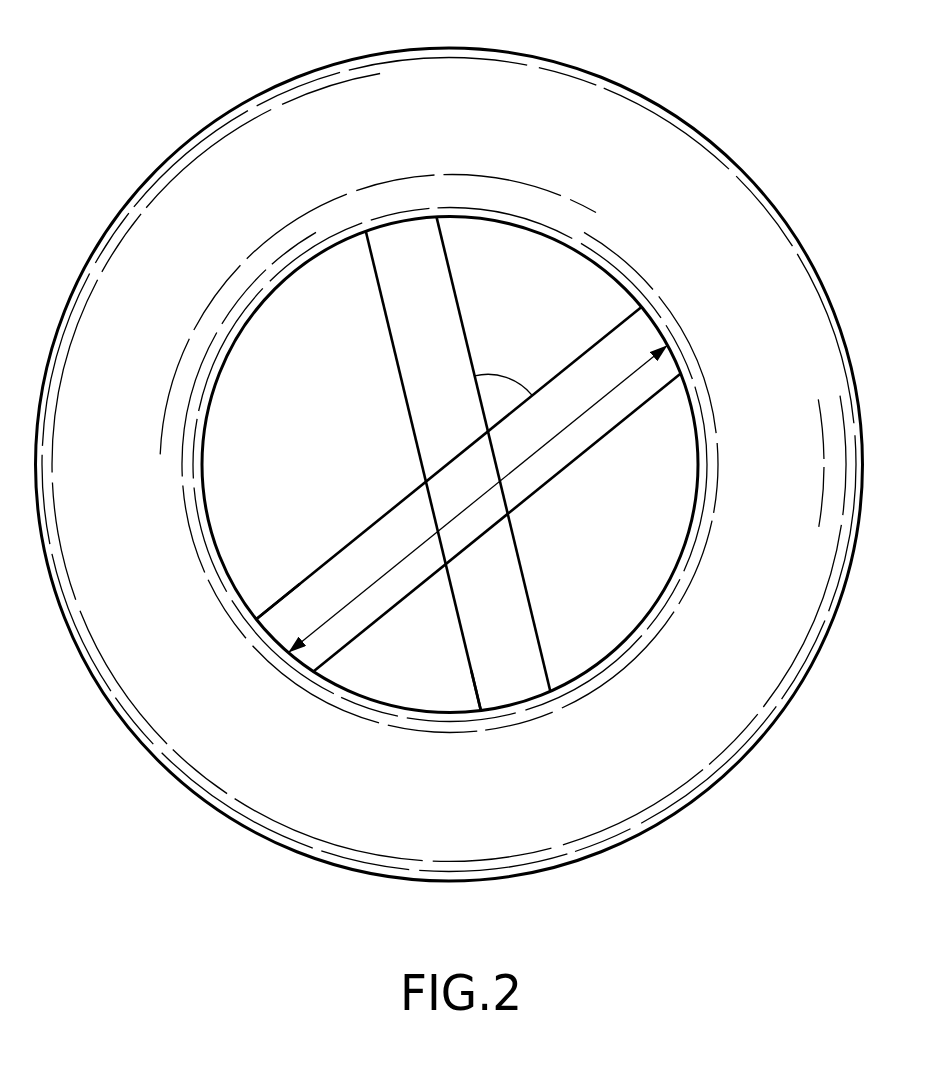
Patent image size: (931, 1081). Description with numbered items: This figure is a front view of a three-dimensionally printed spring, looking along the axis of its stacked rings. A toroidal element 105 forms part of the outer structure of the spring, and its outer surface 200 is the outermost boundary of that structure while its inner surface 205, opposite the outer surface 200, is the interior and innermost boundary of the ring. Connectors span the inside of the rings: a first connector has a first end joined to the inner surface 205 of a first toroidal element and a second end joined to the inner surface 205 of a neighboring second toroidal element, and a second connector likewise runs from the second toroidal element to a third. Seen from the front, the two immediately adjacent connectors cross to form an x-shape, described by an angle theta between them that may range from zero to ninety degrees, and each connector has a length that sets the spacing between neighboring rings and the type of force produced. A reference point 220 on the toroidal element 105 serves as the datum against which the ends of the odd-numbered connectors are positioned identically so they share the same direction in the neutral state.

The toroidal element 105 is at (692, 120).
The outer surface 200 is at (451, 448).
The inner surface 205 is at (662, 585).
The reference point 220 is at (213, 392).